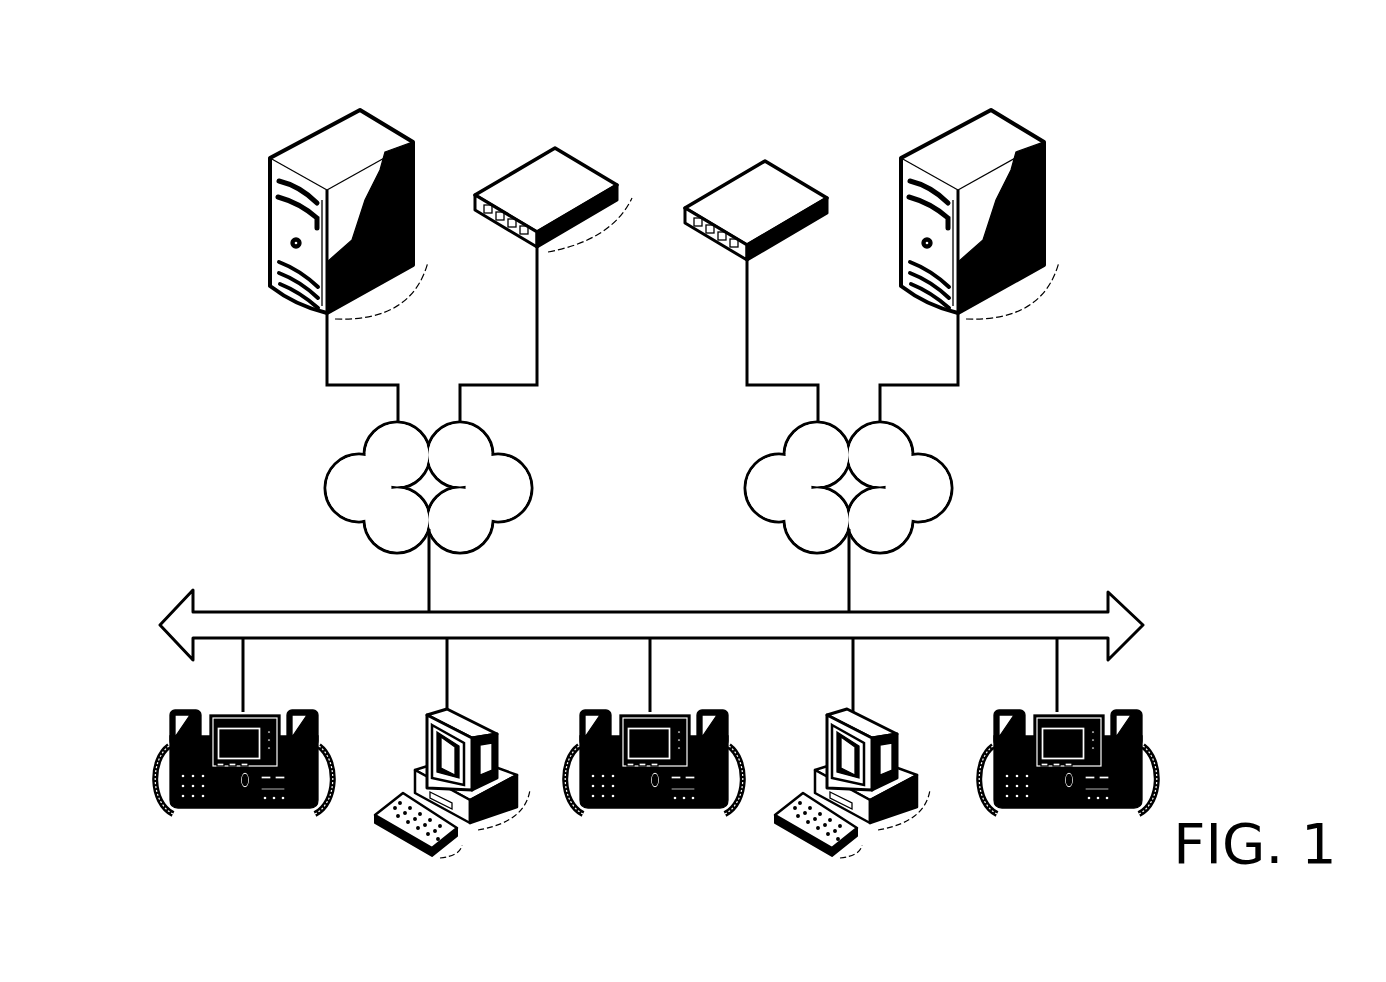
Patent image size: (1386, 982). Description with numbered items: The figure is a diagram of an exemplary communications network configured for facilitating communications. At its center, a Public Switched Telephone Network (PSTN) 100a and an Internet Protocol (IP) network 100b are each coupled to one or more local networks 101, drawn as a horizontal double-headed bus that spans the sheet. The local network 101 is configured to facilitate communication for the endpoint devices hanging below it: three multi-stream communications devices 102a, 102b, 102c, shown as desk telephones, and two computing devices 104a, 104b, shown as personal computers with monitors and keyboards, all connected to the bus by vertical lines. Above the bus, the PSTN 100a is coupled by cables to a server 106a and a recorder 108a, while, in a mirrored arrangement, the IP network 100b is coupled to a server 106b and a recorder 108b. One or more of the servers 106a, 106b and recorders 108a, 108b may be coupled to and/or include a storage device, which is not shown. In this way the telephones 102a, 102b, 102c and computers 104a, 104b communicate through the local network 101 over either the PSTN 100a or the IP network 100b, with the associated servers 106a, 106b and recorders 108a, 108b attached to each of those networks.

The Public Switched Telephone Network (PSTN) 100a is at (533, 482).
The IP network 100b is at (955, 485).
The local network 101 is at (617, 611).
The multi-stream communications device 102a is at (310, 710).
The multi-stream communications device 102b is at (723, 713).
The multi-stream communications device 102c is at (1140, 713).
The computing device 104a is at (467, 710).
The computing device 104b is at (895, 733).
The server 106a is at (388, 126).
The server 106b is at (1042, 143).
The recorder 108a is at (510, 237).
The recorder 108b is at (725, 253).